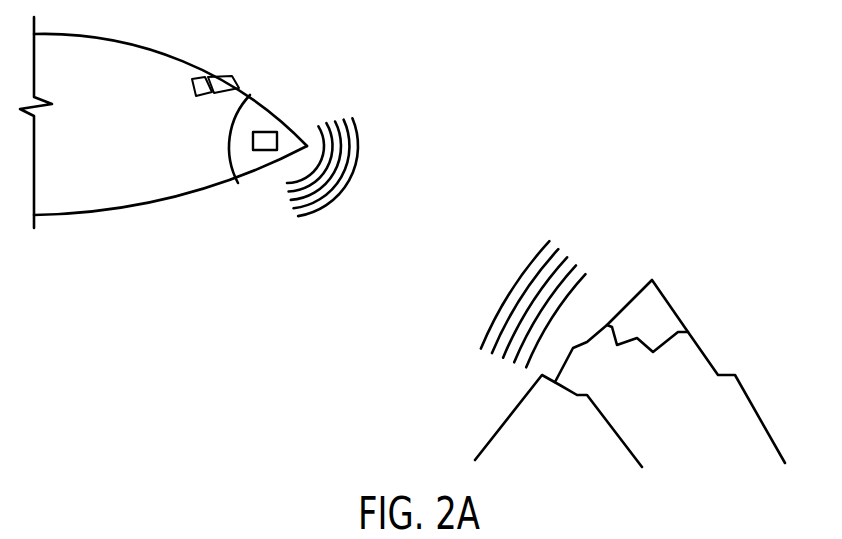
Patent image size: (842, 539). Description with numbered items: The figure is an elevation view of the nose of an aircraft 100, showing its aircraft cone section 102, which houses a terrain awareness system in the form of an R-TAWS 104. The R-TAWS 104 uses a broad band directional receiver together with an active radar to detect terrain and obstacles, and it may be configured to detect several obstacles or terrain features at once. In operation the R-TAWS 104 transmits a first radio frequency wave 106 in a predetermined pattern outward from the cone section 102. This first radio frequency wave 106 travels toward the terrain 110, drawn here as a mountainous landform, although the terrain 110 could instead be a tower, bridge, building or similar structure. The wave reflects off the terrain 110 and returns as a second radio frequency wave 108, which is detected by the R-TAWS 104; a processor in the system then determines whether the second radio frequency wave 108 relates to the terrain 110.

The aircraft 100 is at (158, 54).
The aircraft cone section 102 is at (258, 103).
The R-TAWS 104 is at (274, 132).
The first radio frequency wave 106 is at (357, 130).
The second radio frequency wave 108 is at (532, 252).
The terrain 110 is at (513, 412).